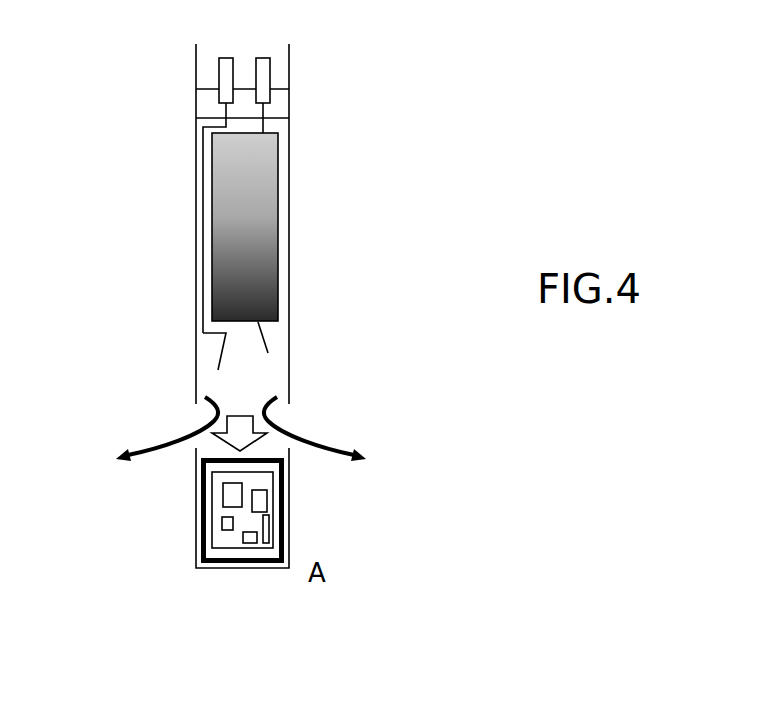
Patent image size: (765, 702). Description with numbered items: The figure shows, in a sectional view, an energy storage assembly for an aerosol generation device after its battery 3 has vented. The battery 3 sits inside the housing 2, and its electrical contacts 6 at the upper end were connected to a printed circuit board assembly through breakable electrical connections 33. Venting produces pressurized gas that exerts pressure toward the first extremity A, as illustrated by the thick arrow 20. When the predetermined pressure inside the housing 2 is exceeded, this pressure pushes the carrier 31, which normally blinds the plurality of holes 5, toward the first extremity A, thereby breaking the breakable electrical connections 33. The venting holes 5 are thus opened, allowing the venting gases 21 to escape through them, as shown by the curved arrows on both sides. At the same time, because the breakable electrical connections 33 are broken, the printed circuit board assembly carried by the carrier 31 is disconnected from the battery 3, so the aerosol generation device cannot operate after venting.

The housing 2 is at (303, 83).
The battery 3 is at (250, 231).
The plurality of holes 5 is at (302, 422).
The electrical contacts 6 is at (218, 69).
The thick arrow 20 is at (242, 431).
The venting gases 21 is at (240, 440).
The carrier 31 is at (285, 500).
The breakable electrical connections 33 is at (265, 343).